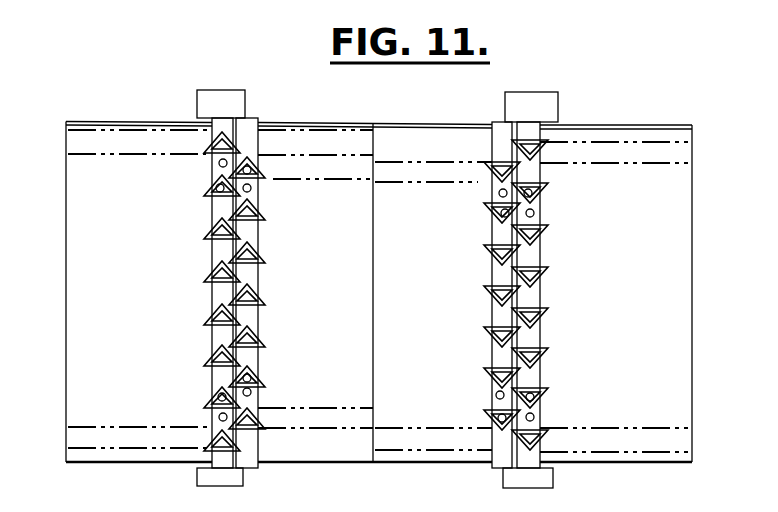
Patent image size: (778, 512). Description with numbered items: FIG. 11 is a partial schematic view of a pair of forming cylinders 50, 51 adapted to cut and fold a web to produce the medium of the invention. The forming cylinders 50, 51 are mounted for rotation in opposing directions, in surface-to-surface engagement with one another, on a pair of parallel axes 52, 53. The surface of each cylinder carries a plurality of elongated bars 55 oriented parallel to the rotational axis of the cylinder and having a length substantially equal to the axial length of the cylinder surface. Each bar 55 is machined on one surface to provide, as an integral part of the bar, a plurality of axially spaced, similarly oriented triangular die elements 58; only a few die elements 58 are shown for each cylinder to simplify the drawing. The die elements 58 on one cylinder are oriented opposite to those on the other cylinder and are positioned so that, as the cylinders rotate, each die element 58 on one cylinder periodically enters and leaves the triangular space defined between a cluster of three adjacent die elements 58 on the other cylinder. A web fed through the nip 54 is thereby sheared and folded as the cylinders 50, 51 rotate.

The forming cylinder 50 is at (88, 344).
The forming cylinder 51 is at (658, 328).
The axis 52 is at (228, 92).
The axis 53 is at (540, 108).
The nip 54 is at (374, 270).
The elongated bar 55 is at (225, 372).
The triangular die element 58 is at (246, 224).